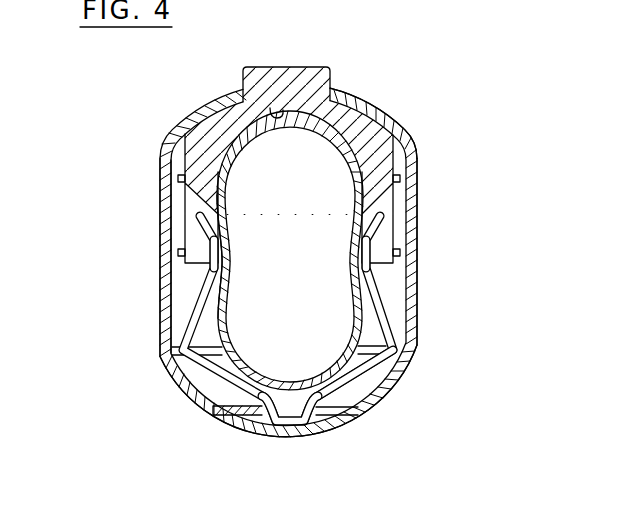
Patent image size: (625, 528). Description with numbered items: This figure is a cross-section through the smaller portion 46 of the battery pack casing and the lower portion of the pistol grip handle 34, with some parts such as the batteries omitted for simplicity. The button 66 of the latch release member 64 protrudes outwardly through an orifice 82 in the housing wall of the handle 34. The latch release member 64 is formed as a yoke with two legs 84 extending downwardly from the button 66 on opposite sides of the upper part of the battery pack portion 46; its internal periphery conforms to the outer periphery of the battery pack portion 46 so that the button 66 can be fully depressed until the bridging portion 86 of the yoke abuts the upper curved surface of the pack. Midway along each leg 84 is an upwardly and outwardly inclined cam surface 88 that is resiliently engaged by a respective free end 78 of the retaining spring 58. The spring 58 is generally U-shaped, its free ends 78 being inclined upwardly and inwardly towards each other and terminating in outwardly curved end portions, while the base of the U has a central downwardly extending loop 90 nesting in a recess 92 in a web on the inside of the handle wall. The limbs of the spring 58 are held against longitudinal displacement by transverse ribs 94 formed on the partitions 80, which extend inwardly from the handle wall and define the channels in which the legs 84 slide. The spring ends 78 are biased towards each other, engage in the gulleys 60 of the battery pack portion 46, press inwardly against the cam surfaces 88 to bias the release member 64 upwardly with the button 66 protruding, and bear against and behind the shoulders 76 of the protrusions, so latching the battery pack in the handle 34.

The pistol grip handle 34 is at (176, 127).
The battery pack smaller portion 46 is at (292, 130).
The retaining spring 58 is at (175, 316).
The gulleys 60 is at (232, 242).
The latch release member 64 is at (338, 136).
The button 66 is at (303, 76).
The shoulder 76 is at (369, 272).
The free ends of the retaining spring 78 is at (212, 270).
The partitions 80 is at (383, 297).
The orifice 82 is at (338, 90).
The legs 84 is at (168, 155).
The bridging portion 86 is at (270, 108).
The cam surface 88 is at (178, 217).
The loop 90 is at (281, 402).
The recess 92 is at (265, 418).
The transverse ribs 94 is at (209, 352).